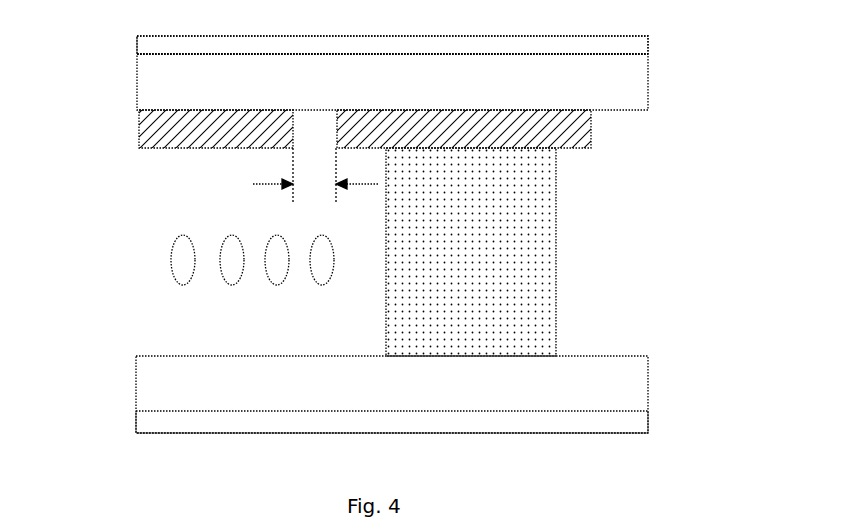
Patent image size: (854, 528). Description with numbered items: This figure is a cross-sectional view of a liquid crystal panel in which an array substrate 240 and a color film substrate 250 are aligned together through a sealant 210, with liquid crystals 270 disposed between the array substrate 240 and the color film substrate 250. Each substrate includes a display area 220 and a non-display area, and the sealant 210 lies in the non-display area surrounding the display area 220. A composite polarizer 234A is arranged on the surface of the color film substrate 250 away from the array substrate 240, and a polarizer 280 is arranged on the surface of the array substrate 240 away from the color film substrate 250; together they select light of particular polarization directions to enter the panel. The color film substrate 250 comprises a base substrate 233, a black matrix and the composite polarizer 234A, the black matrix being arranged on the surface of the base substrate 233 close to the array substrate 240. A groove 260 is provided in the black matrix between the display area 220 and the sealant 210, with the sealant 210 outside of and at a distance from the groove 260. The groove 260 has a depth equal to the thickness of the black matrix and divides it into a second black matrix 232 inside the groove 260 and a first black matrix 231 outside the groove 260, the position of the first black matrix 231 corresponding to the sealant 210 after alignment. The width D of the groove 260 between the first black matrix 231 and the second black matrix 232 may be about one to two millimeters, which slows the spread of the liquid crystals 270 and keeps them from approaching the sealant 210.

The sealant 210 is at (513, 248).
The display area 220 is at (205, 207).
The first black matrix 231 is at (583, 137).
The second black matrix 232 is at (160, 142).
The base substrate 233 is at (648, 100).
The composite polarizer 234A is at (648, 54).
The array substrate 240 is at (648, 397).
The color film substrate 250 is at (137, 54).
The groove 260 is at (312, 128).
The liquid crystal 270 is at (183, 260).
The polarizer 280 is at (145, 428).